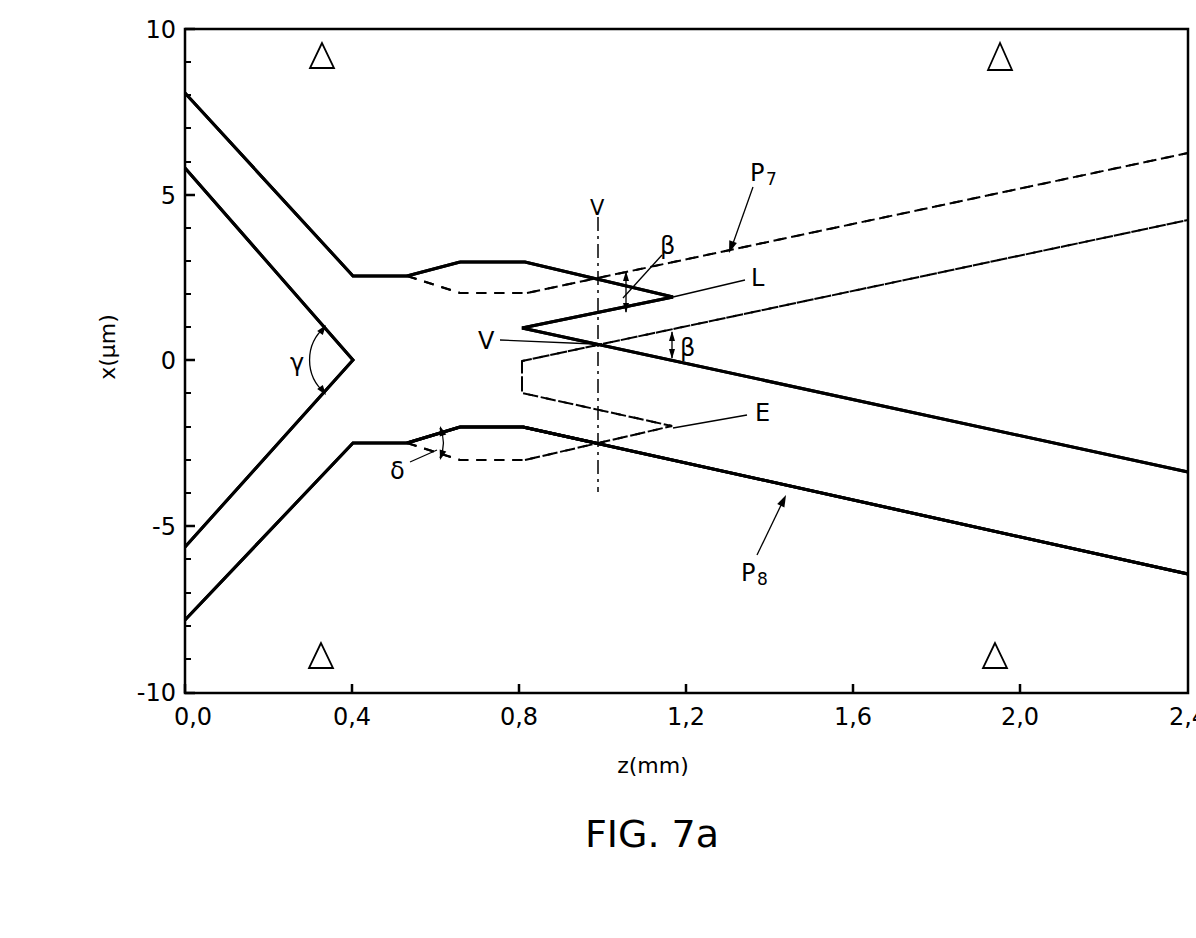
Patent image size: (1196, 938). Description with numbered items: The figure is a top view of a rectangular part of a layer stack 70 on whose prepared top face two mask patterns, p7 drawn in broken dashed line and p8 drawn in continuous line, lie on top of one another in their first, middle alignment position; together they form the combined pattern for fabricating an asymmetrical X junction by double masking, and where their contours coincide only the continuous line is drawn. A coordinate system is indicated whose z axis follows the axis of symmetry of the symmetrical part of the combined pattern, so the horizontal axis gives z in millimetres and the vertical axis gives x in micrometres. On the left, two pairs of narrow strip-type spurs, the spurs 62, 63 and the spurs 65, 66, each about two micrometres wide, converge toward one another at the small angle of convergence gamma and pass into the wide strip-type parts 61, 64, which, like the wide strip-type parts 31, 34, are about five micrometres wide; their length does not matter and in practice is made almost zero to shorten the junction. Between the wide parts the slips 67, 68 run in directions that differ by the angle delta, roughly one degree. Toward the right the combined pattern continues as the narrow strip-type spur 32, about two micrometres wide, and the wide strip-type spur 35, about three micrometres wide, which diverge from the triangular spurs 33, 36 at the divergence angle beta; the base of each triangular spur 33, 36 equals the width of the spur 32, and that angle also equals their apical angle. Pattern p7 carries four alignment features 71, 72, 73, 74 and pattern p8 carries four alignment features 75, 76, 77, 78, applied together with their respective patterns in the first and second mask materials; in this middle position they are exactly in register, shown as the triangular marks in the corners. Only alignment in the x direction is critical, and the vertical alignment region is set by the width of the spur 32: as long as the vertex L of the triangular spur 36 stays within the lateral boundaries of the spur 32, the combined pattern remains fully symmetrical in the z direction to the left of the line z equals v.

The layer stack 70 is at (744, 86).
The wide strip-type part 31 is at (500, 447).
The narrow strip-type spur 32 is at (867, 235).
The triangular spur 33 is at (538, 445).
The wide strip-type part 34 is at (495, 270).
The wide strip-type spur 35 is at (861, 487).
The triangular spur 36 is at (562, 297).
The wide strip-type part 61 is at (309, 357).
The strip-type spur 62 is at (296, 184).
The strip-type spur 63 is at (296, 531).
The wide strip-type part 64 is at (370, 290).
The strip-type spur 65 is at (260, 197).
The strip-type spur 66 is at (263, 517).
The slip 67 is at (452, 448).
The slip 68 is at (440, 277).
The alignment feature 71 is at (365, 58).
The alignment feature 72 is at (1043, 59).
The alignment feature 73 is at (364, 658).
The alignment feature 74 is at (1038, 658).
The alignment feature 75 is at (333, 58).
The alignment feature 76 is at (1011, 60).
The alignment feature 77 is at (332, 658).
The alignment feature 78 is at (1006, 658).